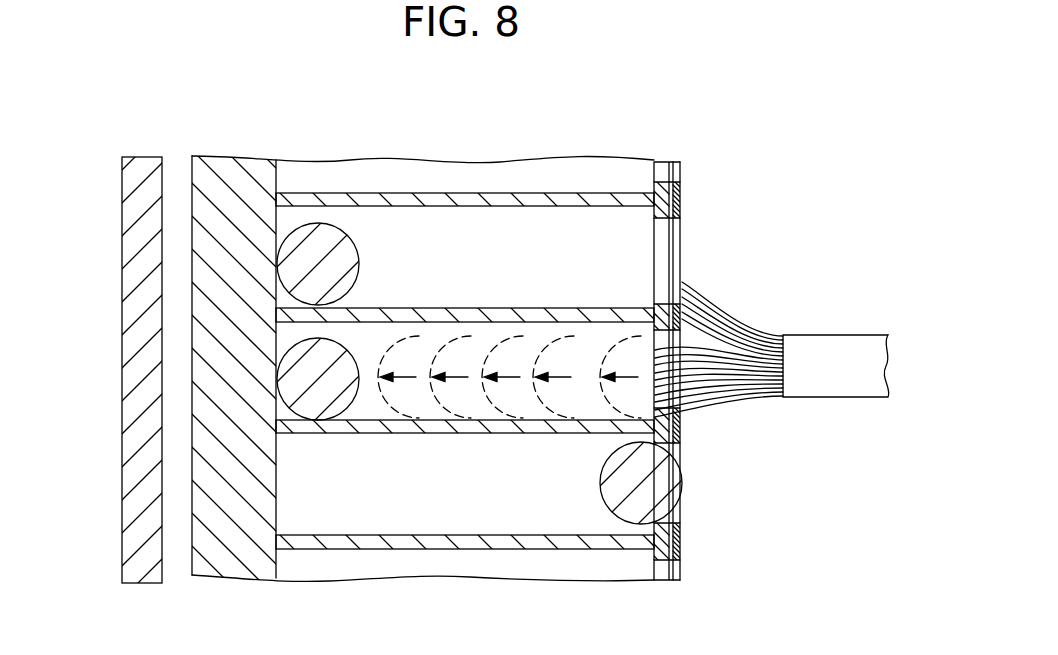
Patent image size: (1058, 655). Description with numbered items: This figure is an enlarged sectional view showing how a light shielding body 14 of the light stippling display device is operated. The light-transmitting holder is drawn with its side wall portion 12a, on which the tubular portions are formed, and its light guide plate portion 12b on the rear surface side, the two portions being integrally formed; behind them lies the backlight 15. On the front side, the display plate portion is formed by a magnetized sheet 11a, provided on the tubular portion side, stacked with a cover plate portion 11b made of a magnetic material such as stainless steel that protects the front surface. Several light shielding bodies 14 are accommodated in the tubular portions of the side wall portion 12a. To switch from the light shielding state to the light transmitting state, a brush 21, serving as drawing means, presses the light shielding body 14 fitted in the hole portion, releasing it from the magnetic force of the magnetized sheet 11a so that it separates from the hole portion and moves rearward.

The magnetized sheet 11a is at (667, 200).
The cover plate portion 11b is at (680, 418).
The side wall portion 12a is at (512, 306).
The light guide plate portion 12b is at (243, 175).
The light shielding body 14 is at (349, 247).
The backlight 15 is at (122, 283).
The brush 21 is at (740, 327).